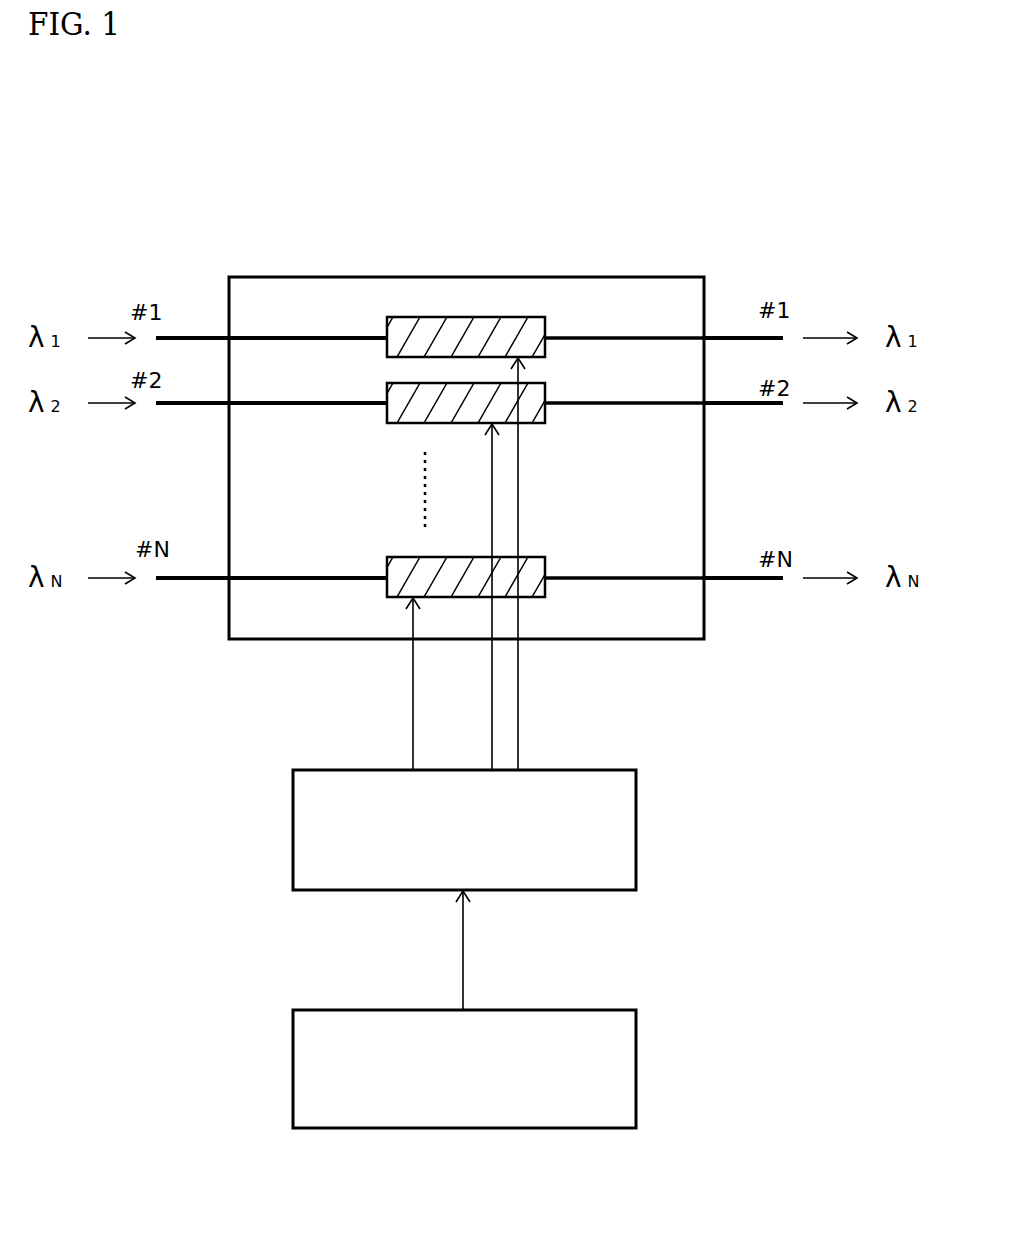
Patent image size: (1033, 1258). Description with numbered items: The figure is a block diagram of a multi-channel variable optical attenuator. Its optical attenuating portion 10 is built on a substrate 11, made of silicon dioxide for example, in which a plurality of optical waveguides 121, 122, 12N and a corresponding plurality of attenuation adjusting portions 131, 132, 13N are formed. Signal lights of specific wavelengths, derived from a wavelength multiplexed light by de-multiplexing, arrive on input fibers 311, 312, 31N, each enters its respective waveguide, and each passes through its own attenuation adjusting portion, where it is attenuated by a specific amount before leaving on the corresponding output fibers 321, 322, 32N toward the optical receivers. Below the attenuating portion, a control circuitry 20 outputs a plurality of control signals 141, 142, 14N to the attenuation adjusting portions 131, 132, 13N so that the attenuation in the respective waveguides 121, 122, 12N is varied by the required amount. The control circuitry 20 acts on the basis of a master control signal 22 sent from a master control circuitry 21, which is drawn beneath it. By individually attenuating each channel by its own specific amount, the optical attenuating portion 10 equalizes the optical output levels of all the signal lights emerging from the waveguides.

The optical attenuating portion 10 is at (390, 246).
The substrate 11 is at (302, 290).
The optical waveguide 121 is at (640, 335).
The optical waveguide 122 is at (640, 406).
The optical waveguide 12N is at (647, 581).
The attenuation adjusting portion 131 is at (497, 316).
The attenuation adjusting portion 132 is at (525, 425).
The attenuation adjusting portion 13N is at (533, 599).
The control signal 141 is at (518, 680).
The control signal 142 is at (493, 720).
The control signal 14N is at (412, 702).
The control circuitry 20 is at (636, 825).
The master control circuitry 21 is at (636, 1062).
The master control signal 22 is at (463, 952).
The fiber 311 is at (190, 335).
The fiber 312 is at (181, 406).
The fiber 31N is at (177, 582).
The fiber 321 is at (745, 335).
The fiber 322 is at (735, 406).
The fiber 32N is at (742, 581).